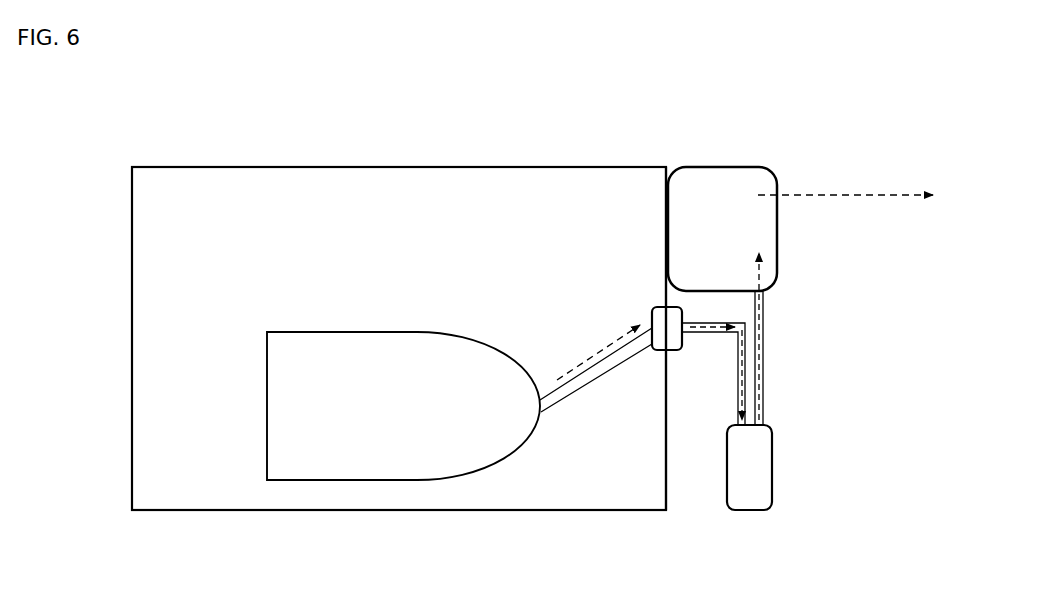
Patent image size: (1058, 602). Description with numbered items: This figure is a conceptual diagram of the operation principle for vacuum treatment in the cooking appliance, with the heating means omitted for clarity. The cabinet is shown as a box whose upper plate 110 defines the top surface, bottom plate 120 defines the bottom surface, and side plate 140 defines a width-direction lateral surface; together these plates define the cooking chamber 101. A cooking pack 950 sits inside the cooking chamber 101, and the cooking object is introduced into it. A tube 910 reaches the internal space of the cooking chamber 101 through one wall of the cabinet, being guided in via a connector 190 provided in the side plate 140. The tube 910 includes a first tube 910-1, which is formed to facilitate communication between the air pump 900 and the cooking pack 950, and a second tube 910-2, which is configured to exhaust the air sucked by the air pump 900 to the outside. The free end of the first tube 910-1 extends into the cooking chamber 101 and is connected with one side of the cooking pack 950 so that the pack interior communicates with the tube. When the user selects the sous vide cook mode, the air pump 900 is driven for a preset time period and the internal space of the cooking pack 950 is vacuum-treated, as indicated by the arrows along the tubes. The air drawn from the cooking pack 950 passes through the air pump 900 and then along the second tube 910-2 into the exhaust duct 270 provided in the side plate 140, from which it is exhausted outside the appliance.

The cooking chamber 101 is at (185, 190).
The upper plate 110 is at (398, 167).
The bottom plate 120 is at (400, 510).
The side plate 140 is at (670, 470).
The connector 190 is at (655, 307).
The exhaust duct 270 is at (718, 183).
The air pump 900 is at (760, 464).
The tube 910 is at (799, 339).
The first tube 910-1 is at (745, 343).
The second tube 910-2 is at (763, 395).
The cooking pack 950 is at (285, 463).